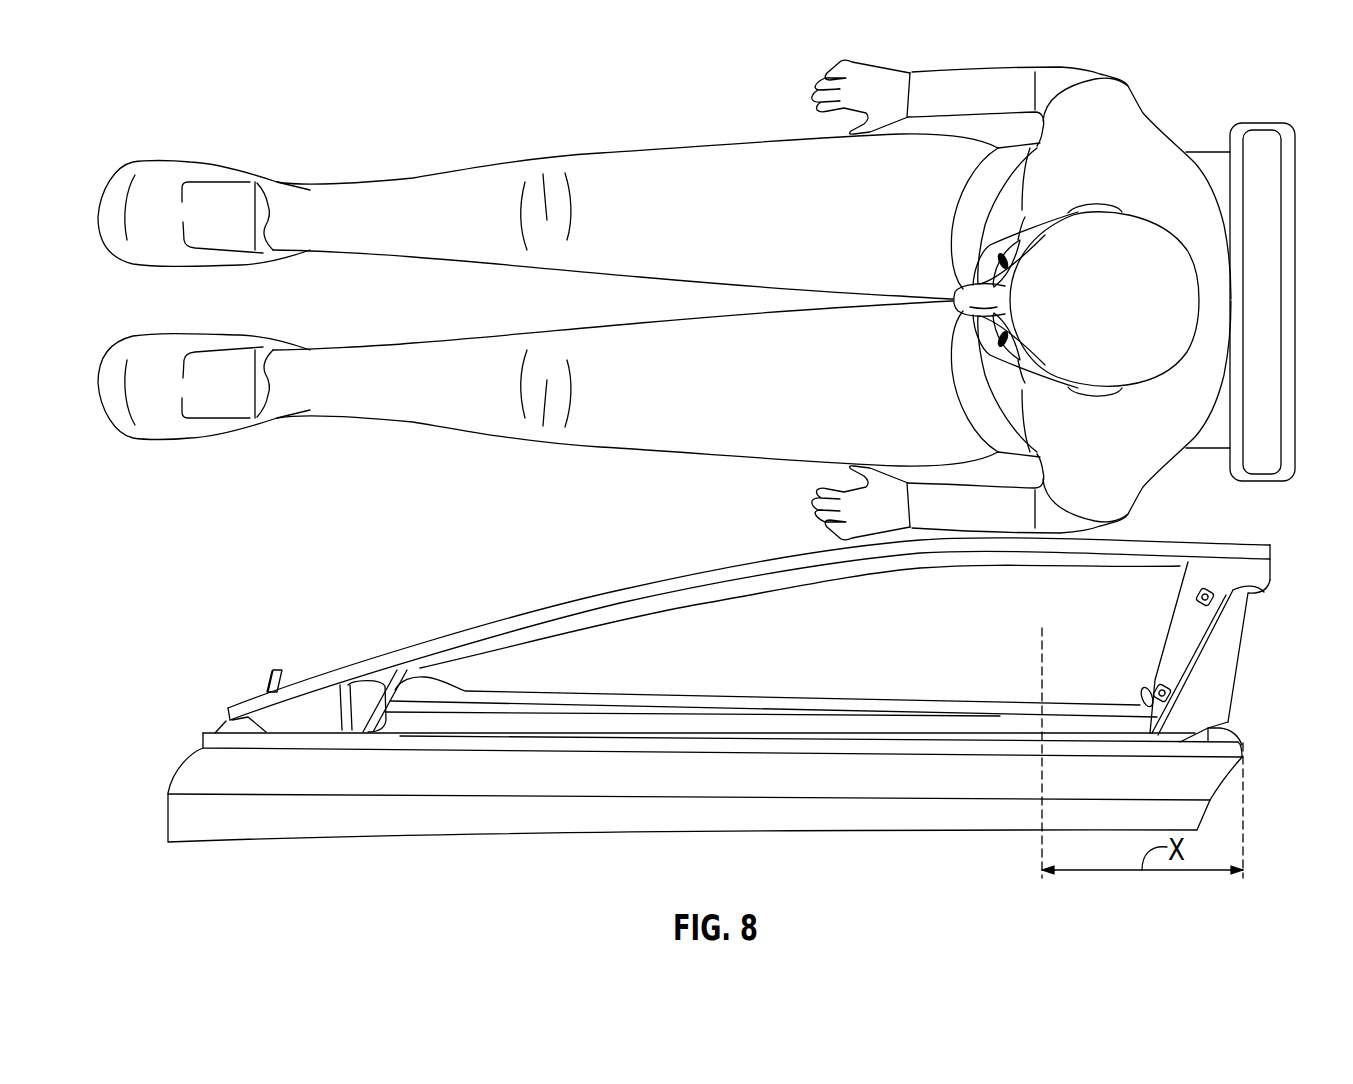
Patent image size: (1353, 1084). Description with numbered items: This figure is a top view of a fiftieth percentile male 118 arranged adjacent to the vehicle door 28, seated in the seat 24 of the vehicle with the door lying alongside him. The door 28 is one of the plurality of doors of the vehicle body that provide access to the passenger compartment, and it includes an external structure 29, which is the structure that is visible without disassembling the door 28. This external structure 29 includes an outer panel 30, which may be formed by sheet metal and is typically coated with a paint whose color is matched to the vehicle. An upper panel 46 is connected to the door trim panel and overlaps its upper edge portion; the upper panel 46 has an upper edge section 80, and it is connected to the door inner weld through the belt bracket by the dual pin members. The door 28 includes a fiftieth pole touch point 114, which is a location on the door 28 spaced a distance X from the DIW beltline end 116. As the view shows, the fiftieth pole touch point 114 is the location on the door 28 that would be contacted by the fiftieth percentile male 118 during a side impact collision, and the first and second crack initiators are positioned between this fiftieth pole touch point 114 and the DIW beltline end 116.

The occupant 118 is at (1160, 91).
The seat 24 is at (1208, 435).
The door 28 is at (166, 751).
The external structure 29 is at (748, 805).
The outer panel 30 is at (225, 785).
The upper panel 46 is at (612, 690).
The upper edge section 80 is at (700, 693).
The DIW beltline end 116 is at (1227, 732).
The 50th pole touch point 114 is at (1028, 781).